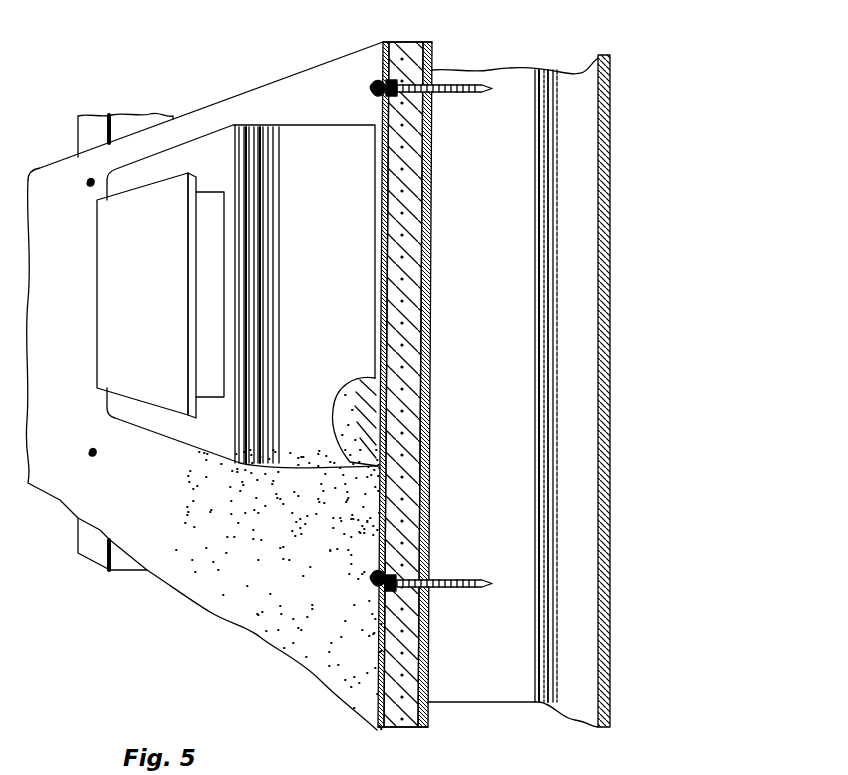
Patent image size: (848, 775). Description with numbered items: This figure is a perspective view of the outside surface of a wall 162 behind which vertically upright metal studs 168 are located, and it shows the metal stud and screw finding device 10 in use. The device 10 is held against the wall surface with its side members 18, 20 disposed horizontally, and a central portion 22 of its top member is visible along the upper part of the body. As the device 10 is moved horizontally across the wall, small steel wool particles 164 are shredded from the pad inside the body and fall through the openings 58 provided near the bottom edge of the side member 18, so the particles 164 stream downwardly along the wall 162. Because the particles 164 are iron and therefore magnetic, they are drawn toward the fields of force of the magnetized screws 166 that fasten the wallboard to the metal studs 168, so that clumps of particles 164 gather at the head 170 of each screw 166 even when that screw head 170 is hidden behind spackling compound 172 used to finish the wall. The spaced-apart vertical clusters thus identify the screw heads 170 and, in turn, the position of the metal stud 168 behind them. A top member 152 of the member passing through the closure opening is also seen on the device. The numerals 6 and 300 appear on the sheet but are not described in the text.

The metal stud and screw finding device 10 is at (85, 263).
The side member 18 is at (180, 447).
The side member 20 is at (347, 123).
The central portion 22 is at (13, 634).
The openings 58 is at (355, 470).
The top member 152 is at (163, 307).
The wall 162 is at (378, 700).
The steel wool particles 164 is at (368, 90).
The screws 166 is at (456, 97).
The metal studs 168 is at (578, 77).
The screw head 170 is at (392, 88).
The spackling compound 172 is at (383, 55).
The partial numeral 6 is at (3, 749).
The partial numeral 300 is at (64, 770).